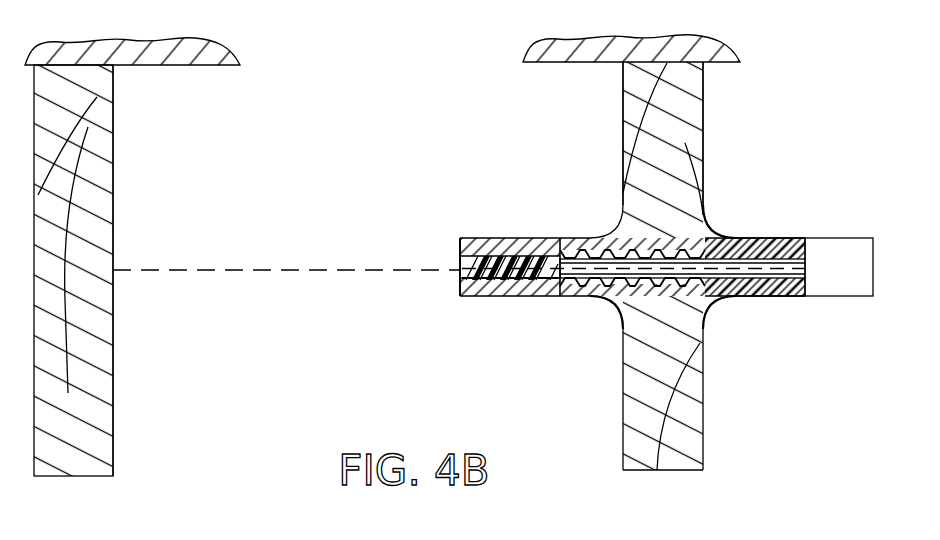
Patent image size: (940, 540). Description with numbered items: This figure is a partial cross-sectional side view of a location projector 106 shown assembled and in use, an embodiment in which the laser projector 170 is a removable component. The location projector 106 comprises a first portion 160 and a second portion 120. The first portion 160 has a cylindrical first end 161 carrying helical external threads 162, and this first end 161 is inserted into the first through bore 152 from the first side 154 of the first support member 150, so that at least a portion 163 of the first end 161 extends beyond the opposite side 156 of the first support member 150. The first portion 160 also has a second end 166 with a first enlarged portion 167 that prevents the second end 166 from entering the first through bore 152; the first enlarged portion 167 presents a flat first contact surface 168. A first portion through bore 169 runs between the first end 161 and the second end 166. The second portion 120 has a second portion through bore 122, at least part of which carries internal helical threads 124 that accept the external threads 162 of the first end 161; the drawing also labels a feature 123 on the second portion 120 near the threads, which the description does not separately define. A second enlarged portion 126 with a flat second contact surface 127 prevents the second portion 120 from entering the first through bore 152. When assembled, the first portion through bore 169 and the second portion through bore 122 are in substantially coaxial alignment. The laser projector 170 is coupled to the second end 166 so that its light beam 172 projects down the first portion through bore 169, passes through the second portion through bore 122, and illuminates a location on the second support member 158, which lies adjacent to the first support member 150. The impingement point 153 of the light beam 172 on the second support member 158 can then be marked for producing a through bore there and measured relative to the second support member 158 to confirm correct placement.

The location projector 106 is at (722, 192).
The second portion 120 is at (565, 238).
The second portion through bore 122 is at (483, 238).
The spring lower portion 123 is at (507, 296).
The internal helical threads 124 is at (538, 238).
The second enlarged portion 126 is at (607, 305).
The flat second contact surface 127 is at (623, 320).
The first support member 150 is at (630, 115).
The first through bore 152 is at (648, 237).
The impingement point 153 is at (113, 272).
The first side 154 is at (703, 96).
The opposite side 156 is at (623, 88).
The second support member 158 is at (113, 128).
The first portion 160 is at (788, 238).
The cylindrical first end 161 is at (550, 296).
The helical external threads 162 is at (660, 296).
The portion of the first end 163 is at (590, 238).
The second end 166 is at (778, 296).
The first enlarged portion 167 is at (717, 297).
The flat first contact surface 168 is at (687, 193).
The first portion through bore 169 is at (740, 262).
The laser projector 170 is at (850, 243).
The light beam 172 is at (323, 270).